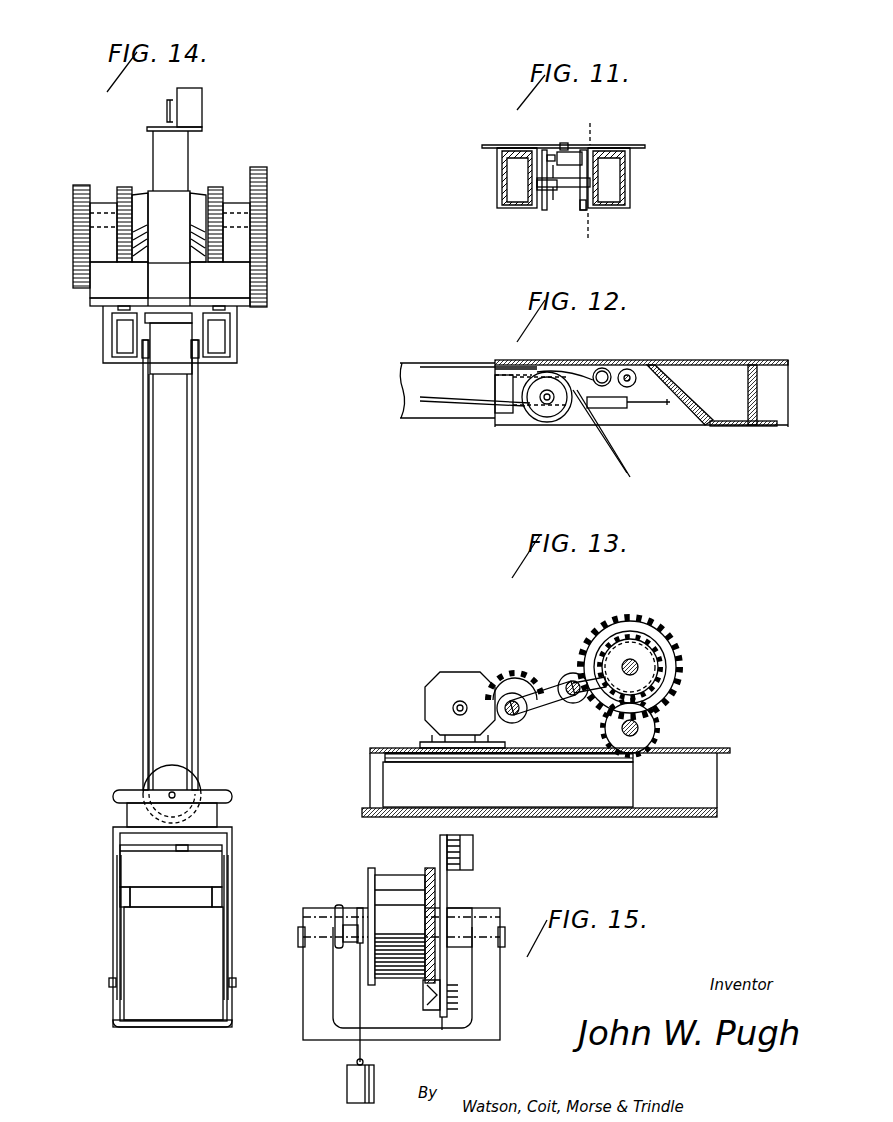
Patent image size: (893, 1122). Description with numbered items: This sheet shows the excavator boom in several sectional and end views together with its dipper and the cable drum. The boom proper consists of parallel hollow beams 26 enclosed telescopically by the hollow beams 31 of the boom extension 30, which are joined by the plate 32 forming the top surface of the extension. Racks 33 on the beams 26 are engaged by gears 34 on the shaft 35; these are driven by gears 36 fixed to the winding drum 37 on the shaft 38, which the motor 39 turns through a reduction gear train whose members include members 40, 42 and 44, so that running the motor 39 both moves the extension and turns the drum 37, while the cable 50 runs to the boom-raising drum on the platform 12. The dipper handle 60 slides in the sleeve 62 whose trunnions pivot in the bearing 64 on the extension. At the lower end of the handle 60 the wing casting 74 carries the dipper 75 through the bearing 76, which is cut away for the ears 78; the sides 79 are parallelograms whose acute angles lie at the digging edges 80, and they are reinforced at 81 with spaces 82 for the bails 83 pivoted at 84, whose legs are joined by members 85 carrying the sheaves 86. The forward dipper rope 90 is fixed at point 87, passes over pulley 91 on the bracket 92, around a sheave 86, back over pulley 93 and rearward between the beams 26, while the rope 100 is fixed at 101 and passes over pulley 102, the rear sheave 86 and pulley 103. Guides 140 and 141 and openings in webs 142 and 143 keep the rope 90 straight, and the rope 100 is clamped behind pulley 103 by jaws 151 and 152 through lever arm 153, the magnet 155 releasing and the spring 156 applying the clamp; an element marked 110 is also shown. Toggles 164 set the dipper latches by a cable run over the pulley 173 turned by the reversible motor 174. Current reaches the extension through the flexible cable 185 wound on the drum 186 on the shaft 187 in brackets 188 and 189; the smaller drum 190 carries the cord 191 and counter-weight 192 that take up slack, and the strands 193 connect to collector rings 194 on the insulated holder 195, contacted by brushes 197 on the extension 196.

In FIG. 11, the platform 12 is at (591, 181).
In FIG. 14, the hollow beams 26 is at (117, 340).
In FIG. 11, the hollow beams 26 is at (505, 165).
In FIG. 12, the hollow beams 26 is at (428, 423).
In FIG. 13, the hollow beams 26 is at (400, 785).
In FIG. 11, the boom extension 30 is at (633, 153).
In FIG. 12, the boom extension 30 is at (690, 362).
In FIG. 13, the boom extension 30 is at (703, 777).
In FIG. 14, the hollow beams 31 is at (237, 360).
In FIG. 11, the hollow beams 31 is at (498, 195).
In FIG. 13, the hollow beams 31 is at (375, 767).
In FIG. 11, the plate 32 is at (552, 152).
In FIG. 14, the racks 33 is at (117, 310).
In FIG. 11, the racks 33 is at (520, 148).
In FIG. 13, the racks 33 is at (415, 757).
In FIG. 14, the gears 34 is at (136, 262).
In FIG. 13, the gears 34 is at (660, 718).
In FIG. 13, the shaft 35 is at (640, 730).
In FIG. 14, the gears 36 is at (123, 188).
In FIG. 13, the gears 36 is at (663, 667).
In FIG. 14, the winding drum 37 is at (193, 200).
In FIG. 13, the winding drum 37 is at (660, 650).
In FIG. 14, the shaft 38 is at (70, 243).
In FIG. 13, the shaft 38 is at (632, 664).
In FIG. 13, the motor 39 is at (448, 683).
In FIG. 14, the reduction gear train member 40 is at (267, 177).
In FIG. 13, the reduction gear train member 40 is at (617, 621).
In FIG. 14, the reduction gear train member 42 is at (73, 212).
In FIG. 14, the reduction gear train member 44 is at (250, 288).
In FIG. 13, the reduction gear train member 44 is at (522, 675).
In FIG. 14, the cable 50 is at (95, 305).
In FIG. 14, the dipper handle 60 is at (160, 492).
In FIG. 14, the sleeve 62 is at (160, 203).
In FIG. 14, the bearing 64 is at (97, 283).
In FIG. 14, the wing casting 74 is at (213, 853).
In FIG. 14, the dipper 75 is at (195, 1017).
In FIG. 14, the bearing 76 is at (162, 902).
In FIG. 14, the ears 78 is at (127, 897).
In FIG. 14, the sides 79 is at (228, 952).
In FIG. 14, the digging edges 80 is at (158, 1030).
In FIG. 14, the reinforcing strips 81 is at (117, 953).
In FIG. 14, the spaces 82 is at (117, 938).
In FIG. 14, the bails 83 is at (127, 812).
In FIG. 14, the pivot 84 is at (108, 983).
In FIG. 14, the members 85 is at (205, 792).
In FIG. 14, the sheaves 86 is at (163, 780).
In FIG. 14, the attachment point 87 is at (142, 317).
In FIG. 14, the forward dipper rope 90 is at (145, 562).
In FIG. 11, the forward dipper rope 90 is at (553, 197).
In FIG. 12, the forward dipper rope 90 is at (663, 410).
In FIG. 14, the pulley 91 is at (142, 377).
In FIG. 14, the bracket 92 is at (173, 372).
In FIG. 14, the pulley 93 is at (202, 383).
In FIG. 12, the dipper rope 100 is at (448, 367).
In FIG. 11, the attachment point 101 is at (543, 150).
In FIG. 11, the pulley 102 is at (545, 207).
In FIG. 11, the pulley 103 is at (582, 208).
In FIG. 12, the pulley 103 is at (542, 413).
In FIG. 11, the block 110 is at (570, 166).
In FIG. 11, the guide 140 is at (528, 193).
In FIG. 12, the guide 140 is at (508, 408).
In FIG. 12, the guide 141 is at (617, 407).
In FIG. 12, the web 142 is at (693, 420).
In FIG. 12, the web 143 is at (763, 373).
In FIG. 11, the jaw 151 is at (587, 150).
In FIG. 11, the jaw 152 is at (570, 145).
In FIG. 12, the jaw 152 is at (500, 352).
In FIG. 12, the lever arm 153 is at (570, 370).
In FIG. 12, the magnet 155 is at (627, 369).
In FIG. 12, the spring 156 is at (602, 368).
In FIG. 14, the toggles 164 is at (188, 851).
In FIG. 14, the pulley 173 is at (167, 106).
In FIG. 14, the reversible motor 174 is at (193, 105).
In FIG. 15, the flexible multiple strand cable 185 is at (427, 870).
In FIG. 15, the drum 186 is at (385, 877).
In FIG. 15, the shaft 187 is at (298, 920).
In FIG. 15, the bracket 188 is at (310, 1007).
In FIG. 15, the bracket 189 is at (488, 978).
In FIG. 15, the smaller drum 190 is at (347, 915).
In FIG. 15, the cord 191 is at (360, 1012).
In FIG. 15, the counter-weight 192 is at (348, 1087).
In FIG. 15, the strands 193 is at (427, 1002).
In FIG. 15, the collector rings 194 is at (460, 1008).
In FIG. 15, the insulated ring holder 195 is at (442, 1020).
In FIG. 15, the extension 196 is at (473, 862).
In FIG. 15, the brushes 197 is at (465, 835).